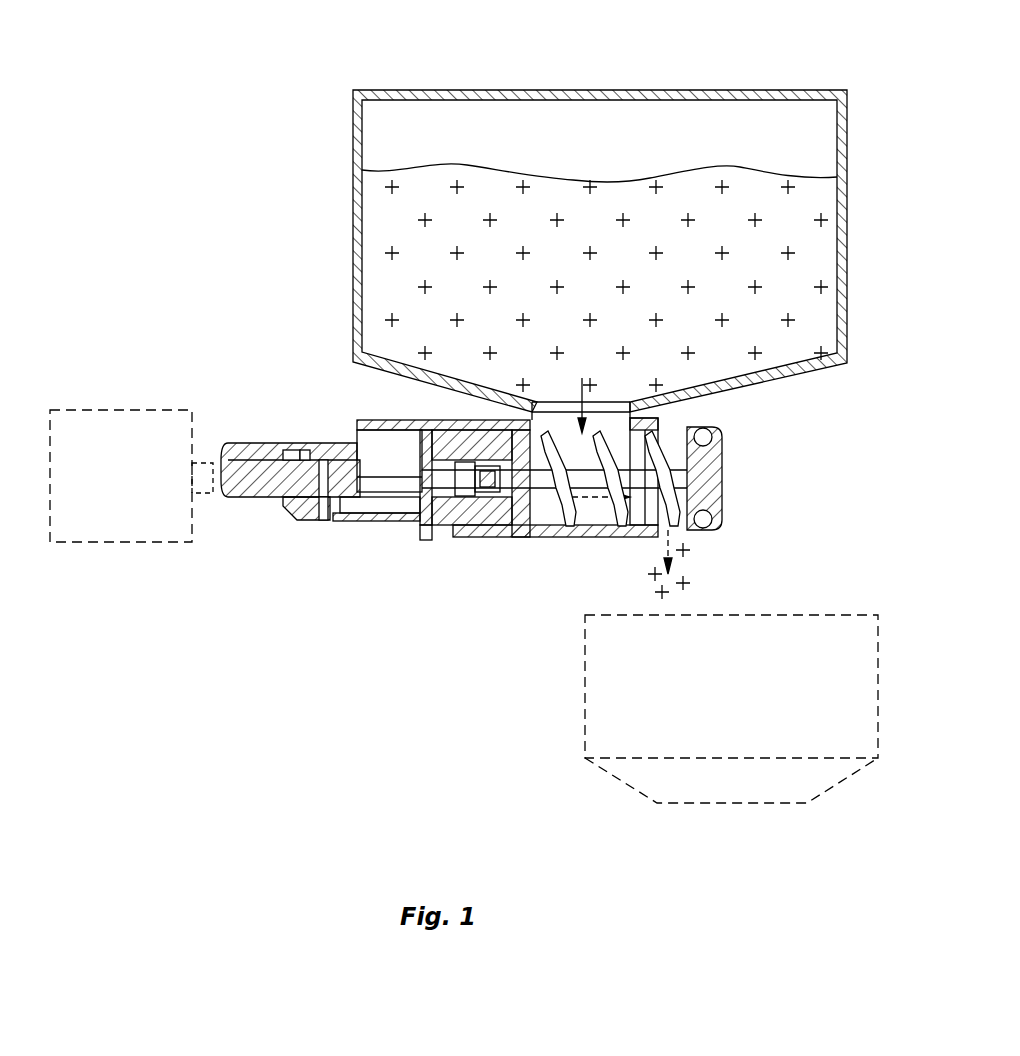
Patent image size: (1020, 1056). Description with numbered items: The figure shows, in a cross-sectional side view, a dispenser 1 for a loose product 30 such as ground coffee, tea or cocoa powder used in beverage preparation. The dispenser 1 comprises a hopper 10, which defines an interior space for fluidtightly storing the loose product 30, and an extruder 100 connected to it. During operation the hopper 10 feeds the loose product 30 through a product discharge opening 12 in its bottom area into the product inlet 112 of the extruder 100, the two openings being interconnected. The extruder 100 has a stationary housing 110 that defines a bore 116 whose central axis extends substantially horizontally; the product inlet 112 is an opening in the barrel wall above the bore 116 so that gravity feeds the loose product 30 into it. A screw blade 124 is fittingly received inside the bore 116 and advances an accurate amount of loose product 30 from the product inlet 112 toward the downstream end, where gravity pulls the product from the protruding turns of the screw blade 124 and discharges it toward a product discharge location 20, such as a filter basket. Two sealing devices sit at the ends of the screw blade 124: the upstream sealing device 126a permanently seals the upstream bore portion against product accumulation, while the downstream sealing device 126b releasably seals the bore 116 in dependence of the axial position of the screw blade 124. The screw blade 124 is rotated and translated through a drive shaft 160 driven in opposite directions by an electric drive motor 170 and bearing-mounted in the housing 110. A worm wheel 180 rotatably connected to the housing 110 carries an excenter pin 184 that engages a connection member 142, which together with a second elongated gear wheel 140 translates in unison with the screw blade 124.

The dispenser 1 is at (238, 233).
The hopper 10 is at (732, 96).
The product discharge opening 12 is at (614, 407).
The product discharge location 20 is at (747, 705).
The loose product 30 is at (572, 262).
The extruder 100 is at (300, 656).
The housing 110 is at (297, 450).
The product inlet 112 is at (545, 422).
The bore 116 is at (378, 452).
The screw blade 124 is at (648, 458).
The upstream sealing device 126a is at (522, 483).
The downstream sealing device 126b is at (708, 492).
The second elongated gear wheel 140 is at (458, 535).
The connection member 142 is at (423, 500).
The drive shaft 160 is at (199, 475).
The drive motor 170 is at (138, 488).
The worm wheel 180 is at (275, 480).
The excenter pin 184 is at (308, 517).